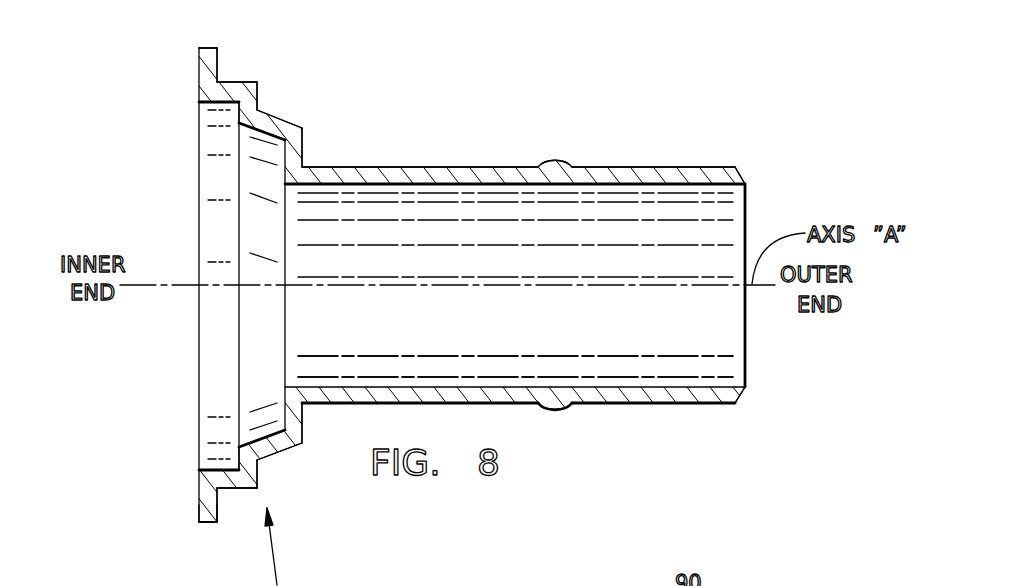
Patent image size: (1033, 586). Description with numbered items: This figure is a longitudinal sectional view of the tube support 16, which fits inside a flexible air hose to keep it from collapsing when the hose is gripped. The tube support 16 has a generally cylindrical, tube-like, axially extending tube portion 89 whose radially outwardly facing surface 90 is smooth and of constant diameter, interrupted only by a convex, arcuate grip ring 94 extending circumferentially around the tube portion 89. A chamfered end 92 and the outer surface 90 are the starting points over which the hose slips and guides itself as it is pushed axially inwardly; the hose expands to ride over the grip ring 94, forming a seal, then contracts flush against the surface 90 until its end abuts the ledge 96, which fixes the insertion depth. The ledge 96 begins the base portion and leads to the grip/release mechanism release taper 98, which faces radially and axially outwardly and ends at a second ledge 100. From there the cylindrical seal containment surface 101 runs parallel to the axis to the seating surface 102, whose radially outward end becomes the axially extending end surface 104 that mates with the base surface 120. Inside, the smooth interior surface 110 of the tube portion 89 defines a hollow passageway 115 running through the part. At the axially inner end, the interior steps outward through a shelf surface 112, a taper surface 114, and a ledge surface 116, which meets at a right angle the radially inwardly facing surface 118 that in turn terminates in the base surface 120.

The tube support 16 is at (789, 190).
The tube portion 89 is at (670, 428).
The radially outwardly facing surface 90 is at (698, 166).
The chamfered end 92 is at (745, 182).
The grip ring 94 is at (558, 162).
The ledge 96 is at (304, 150).
The grip/release mechanism release taper 98 is at (283, 118).
The second ledge 100 is at (259, 92).
The seal containment surface 101 is at (256, 82).
The seating surface 102 is at (219, 62).
The end surface 104 is at (207, 48).
The interior surface 110 is at (431, 387).
The shelf surface 112 is at (285, 400).
The taper surface 114 is at (263, 440).
The hollow passageway 115 is at (680, 364).
The ledge surface 116 is at (238, 456).
The radially inwardly facing surface 118 is at (210, 467).
The base surface 120 is at (200, 507).